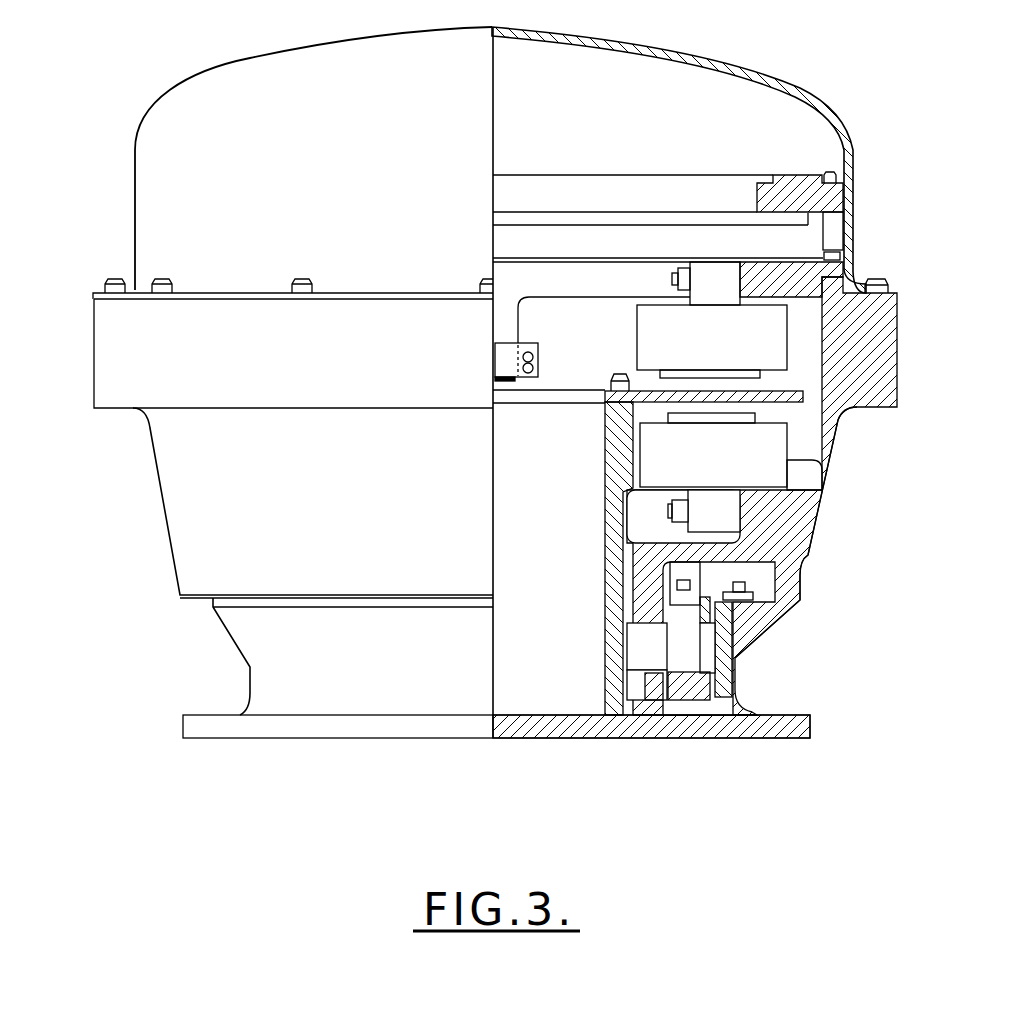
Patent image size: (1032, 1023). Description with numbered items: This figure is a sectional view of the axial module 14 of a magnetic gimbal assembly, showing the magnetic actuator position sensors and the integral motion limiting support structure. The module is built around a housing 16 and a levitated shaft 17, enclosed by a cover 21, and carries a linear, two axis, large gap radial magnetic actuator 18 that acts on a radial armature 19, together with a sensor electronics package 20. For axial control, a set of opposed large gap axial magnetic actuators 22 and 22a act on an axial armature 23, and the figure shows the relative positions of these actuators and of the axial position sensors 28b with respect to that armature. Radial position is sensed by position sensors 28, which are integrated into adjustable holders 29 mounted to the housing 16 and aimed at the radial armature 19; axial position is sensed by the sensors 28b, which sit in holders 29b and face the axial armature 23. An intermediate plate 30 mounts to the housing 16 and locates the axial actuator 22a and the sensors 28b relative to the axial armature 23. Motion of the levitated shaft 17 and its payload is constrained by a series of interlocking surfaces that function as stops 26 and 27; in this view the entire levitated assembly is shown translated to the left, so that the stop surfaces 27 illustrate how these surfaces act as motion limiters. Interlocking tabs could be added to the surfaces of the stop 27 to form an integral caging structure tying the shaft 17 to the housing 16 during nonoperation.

The axial module 14 is at (150, 509).
The housing 16 is at (767, 496).
The shaft 17 is at (810, 728).
The radial magnetic actuator 18 is at (720, 728).
The radial armature 19 is at (727, 655).
The sensor electronics package 20 is at (843, 193).
The cover 21 is at (747, 60).
The axial magnetic actuator 22 is at (787, 460).
The axial magnetic actuator 22a is at (787, 343).
The axial armature 23 is at (803, 396).
The stop 26 is at (596, 602).
The stop surface 27 is at (826, 554).
The position sensor 28 is at (708, 688).
The axial position sensor 28b is at (507, 380).
The adjustable holder 29 is at (680, 662).
The holder 29b is at (533, 380).
The intermediate plate 30 is at (842, 276).